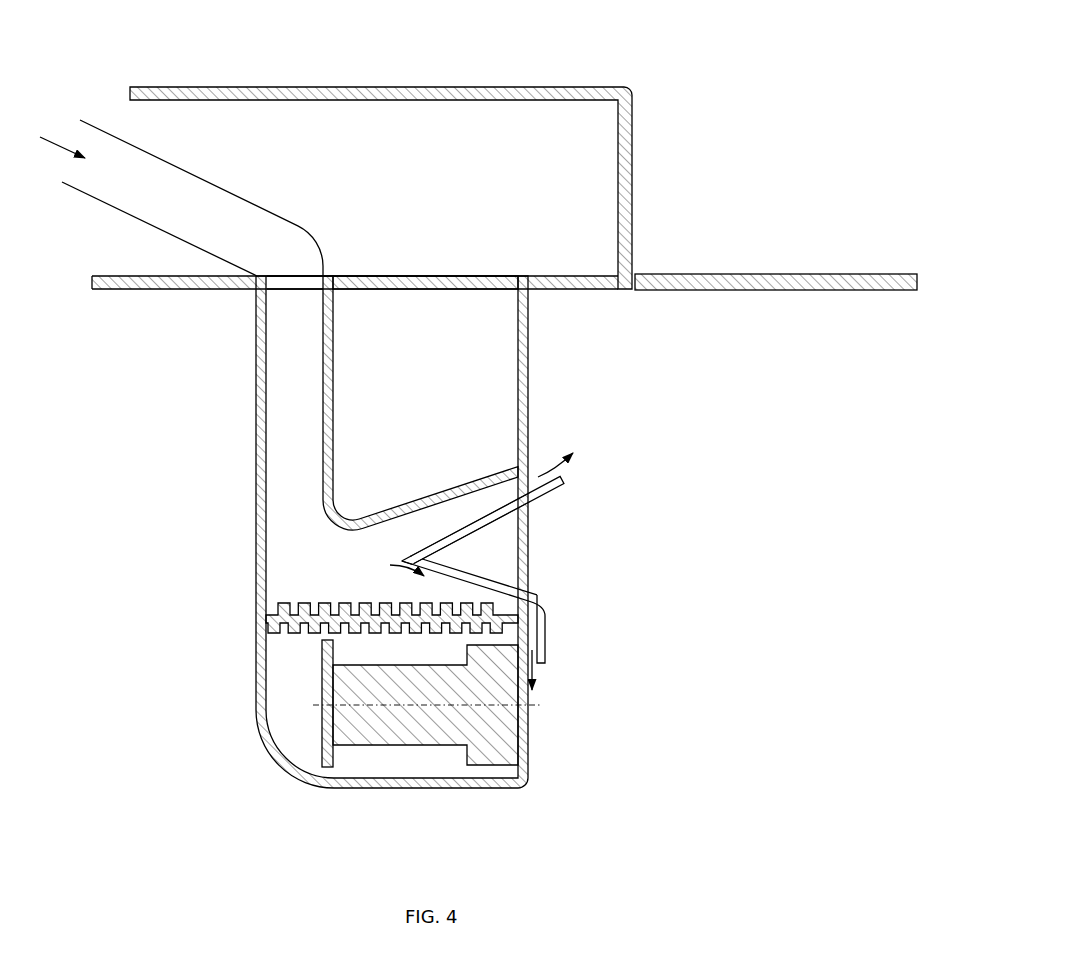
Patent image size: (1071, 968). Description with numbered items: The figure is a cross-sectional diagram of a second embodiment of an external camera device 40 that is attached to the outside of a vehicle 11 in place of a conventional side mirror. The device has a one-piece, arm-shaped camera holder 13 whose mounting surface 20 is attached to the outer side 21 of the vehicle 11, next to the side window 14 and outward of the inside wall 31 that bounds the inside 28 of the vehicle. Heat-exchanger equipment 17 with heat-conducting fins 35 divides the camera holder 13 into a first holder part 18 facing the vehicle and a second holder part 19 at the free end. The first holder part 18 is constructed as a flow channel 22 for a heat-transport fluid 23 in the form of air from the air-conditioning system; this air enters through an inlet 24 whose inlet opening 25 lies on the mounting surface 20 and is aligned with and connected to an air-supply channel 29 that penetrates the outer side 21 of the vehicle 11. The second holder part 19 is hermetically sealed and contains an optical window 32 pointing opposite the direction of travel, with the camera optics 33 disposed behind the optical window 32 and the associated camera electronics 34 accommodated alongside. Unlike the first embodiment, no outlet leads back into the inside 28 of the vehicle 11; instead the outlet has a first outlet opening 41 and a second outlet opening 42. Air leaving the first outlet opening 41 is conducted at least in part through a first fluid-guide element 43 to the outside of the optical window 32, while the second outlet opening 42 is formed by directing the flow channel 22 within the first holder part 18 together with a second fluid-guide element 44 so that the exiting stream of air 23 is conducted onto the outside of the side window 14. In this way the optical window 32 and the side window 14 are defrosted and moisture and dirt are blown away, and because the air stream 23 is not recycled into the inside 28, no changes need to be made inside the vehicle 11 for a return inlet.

The vehicle 11 is at (813, 110).
The camera holder 13 is at (256, 484).
The side window 14 is at (778, 273).
The heat-exchanger equipment 17 is at (297, 593).
The first holder part 18 is at (680, 498).
The second holder part 19 is at (692, 730).
The mounting surface 20 is at (417, 291).
The outer side 21 is at (143, 290).
The flow channel 22 is at (286, 505).
The heat-transport fluid 23 is at (66, 149).
The inlet 24 is at (293, 294).
The inlet opening 25 is at (293, 276).
The inside of the vehicle 28 is at (549, 68).
The air-supply channel 29 is at (188, 173).
The inside wall 31 is at (257, 87).
The optical window 32 is at (524, 729).
The camera optics 33 is at (488, 748).
The camera electronics 34 is at (328, 768).
The fins 35 is at (363, 603).
The external camera device 40 is at (187, 738).
The first outlet opening 41 is at (520, 595).
The second outlet opening 42 is at (528, 533).
The first fluid-guide element 43 is at (547, 633).
The second fluid-guide element 44 is at (552, 492).